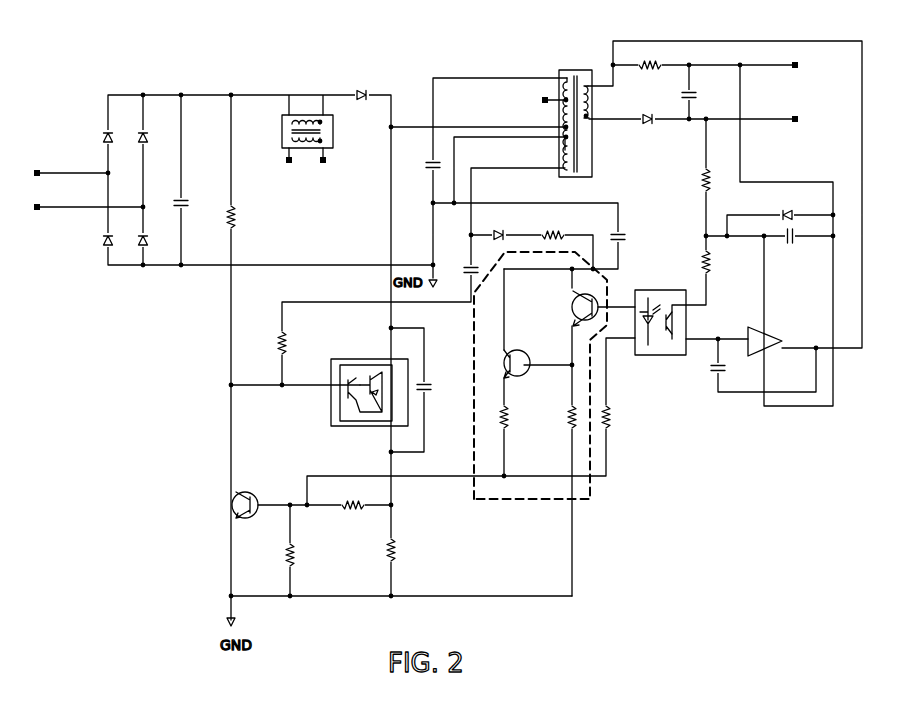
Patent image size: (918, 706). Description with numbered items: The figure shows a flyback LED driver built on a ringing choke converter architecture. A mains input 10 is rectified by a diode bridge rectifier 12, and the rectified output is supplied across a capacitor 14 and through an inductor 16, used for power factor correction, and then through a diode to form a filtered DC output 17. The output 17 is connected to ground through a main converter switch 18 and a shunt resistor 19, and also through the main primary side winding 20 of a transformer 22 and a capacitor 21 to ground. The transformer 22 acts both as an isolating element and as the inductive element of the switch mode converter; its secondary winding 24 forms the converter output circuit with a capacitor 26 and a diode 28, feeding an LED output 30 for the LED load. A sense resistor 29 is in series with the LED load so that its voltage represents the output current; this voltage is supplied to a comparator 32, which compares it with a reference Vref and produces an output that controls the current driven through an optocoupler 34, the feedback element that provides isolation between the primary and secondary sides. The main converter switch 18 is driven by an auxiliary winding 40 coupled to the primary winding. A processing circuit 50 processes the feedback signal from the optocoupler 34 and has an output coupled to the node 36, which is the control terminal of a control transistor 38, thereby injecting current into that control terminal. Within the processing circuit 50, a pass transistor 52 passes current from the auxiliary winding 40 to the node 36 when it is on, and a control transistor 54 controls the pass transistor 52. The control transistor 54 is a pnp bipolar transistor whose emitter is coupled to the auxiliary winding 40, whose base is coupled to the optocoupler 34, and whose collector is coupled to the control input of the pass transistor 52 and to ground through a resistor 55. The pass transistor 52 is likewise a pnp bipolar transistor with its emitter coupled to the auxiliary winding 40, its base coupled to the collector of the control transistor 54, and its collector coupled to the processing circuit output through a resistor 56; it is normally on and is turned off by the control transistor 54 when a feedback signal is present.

The mains input 10 is at (32, 177).
The diode bridge rectifier 12 is at (119, 70).
The capacitor 14 is at (185, 207).
The inductor 16 is at (307, 150).
The filtered DC output 17 is at (392, 126).
The main converter switch 18 is at (366, 358).
The shunt resistor 19 is at (387, 554).
The main primary side winding 20 is at (564, 86).
The capacitor 21 is at (428, 172).
The transformer 22 is at (576, 72).
The secondary winding 24 is at (586, 90).
The capacitor 26 is at (693, 99).
The diode 28 is at (650, 124).
The sense resistor 29 is at (650, 70).
The LED output 30 is at (811, 91).
The comparator 32 is at (770, 330).
The optocoupler 34 is at (650, 356).
The node 36 is at (305, 503).
The control transistor 38 is at (234, 496).
The auxiliary winding 40 is at (565, 151).
The processing circuit 50 is at (580, 500).
The pass transistor 52 is at (523, 352).
The control transistor 54 is at (572, 307).
The resistor 55 is at (568, 426).
The resistor 56 is at (508, 426).